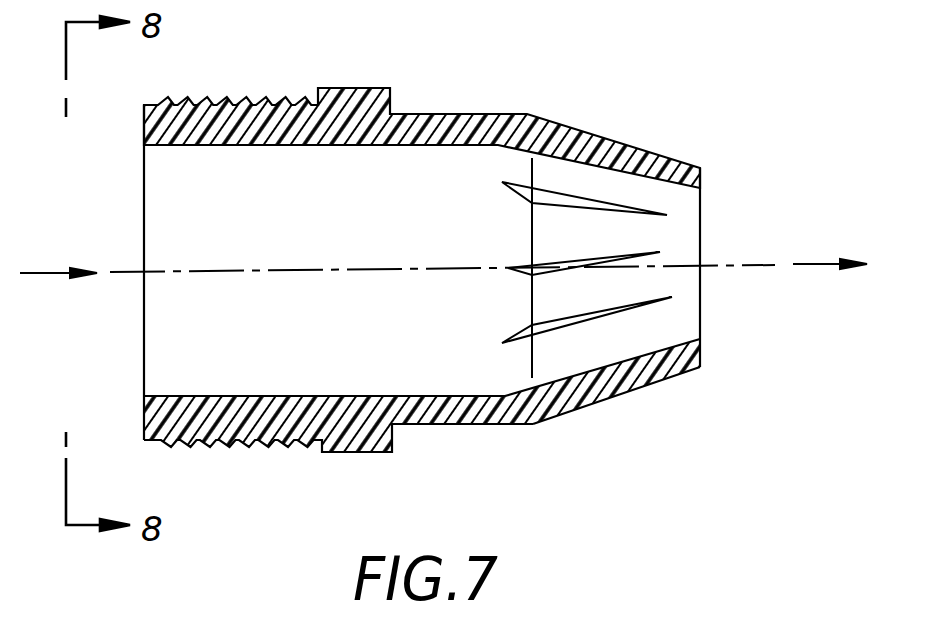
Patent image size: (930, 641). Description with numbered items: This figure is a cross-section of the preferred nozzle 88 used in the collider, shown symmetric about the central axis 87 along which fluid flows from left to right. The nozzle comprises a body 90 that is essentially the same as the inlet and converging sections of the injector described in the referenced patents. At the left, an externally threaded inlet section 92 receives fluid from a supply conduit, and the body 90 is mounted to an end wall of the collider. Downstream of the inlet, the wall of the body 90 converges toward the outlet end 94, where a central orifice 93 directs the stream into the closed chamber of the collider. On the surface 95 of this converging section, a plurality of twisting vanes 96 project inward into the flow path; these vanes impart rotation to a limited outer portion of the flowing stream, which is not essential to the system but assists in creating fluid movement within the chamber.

The central axis 87 is at (127, 273).
The nozzle 88 is at (427, 114).
The body 90 is at (552, 418).
The inlet section 92 is at (258, 379).
The central orifice 93 is at (701, 197).
The outlet end 94 is at (702, 350).
The surface 95 is at (593, 348).
The twisting vanes 96 is at (568, 199).